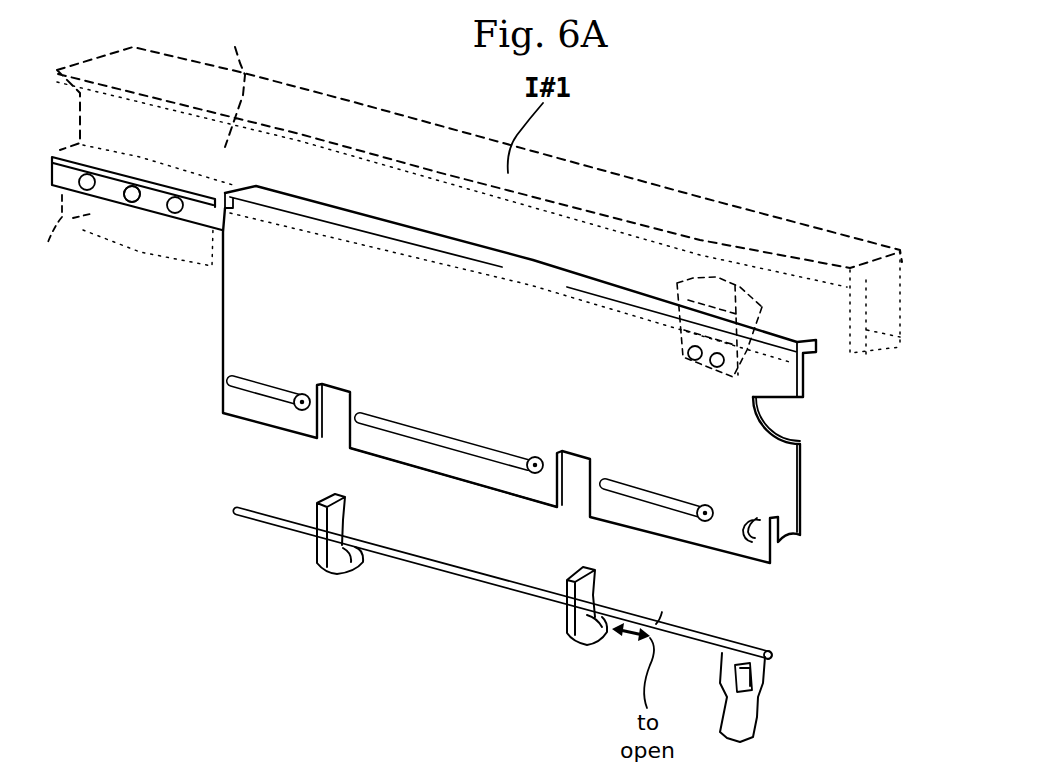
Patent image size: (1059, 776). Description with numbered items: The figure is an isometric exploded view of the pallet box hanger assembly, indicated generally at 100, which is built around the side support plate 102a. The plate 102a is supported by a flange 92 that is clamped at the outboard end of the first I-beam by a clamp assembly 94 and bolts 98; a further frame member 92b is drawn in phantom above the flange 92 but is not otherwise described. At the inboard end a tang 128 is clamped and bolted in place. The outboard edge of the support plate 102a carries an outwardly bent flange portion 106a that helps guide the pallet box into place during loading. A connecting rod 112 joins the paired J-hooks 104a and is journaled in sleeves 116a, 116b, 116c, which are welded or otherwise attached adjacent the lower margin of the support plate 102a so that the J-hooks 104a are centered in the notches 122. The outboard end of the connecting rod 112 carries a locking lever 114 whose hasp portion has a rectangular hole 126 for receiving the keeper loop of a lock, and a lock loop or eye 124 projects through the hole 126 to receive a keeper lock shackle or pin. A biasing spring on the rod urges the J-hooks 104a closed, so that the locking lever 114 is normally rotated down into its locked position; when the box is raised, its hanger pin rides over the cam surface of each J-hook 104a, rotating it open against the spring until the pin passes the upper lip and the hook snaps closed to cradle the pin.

The frame top member 92b is at (228, 43).
The flange 92 is at (556, 292).
The clamp assembly 94 is at (783, 195).
The bolts 98 is at (697, 360).
The latch bracket 100 is at (198, 333).
The side support plate 102a is at (490, 368).
The J-hooks 104a is at (343, 565).
The outwardly bent flange portion 106a is at (778, 483).
The connecting rod 112 is at (460, 575).
The locking lever 114 is at (735, 720).
The sleeve 116a is at (652, 493).
The sleeve 116b is at (502, 453).
The sleeve 116c is at (273, 387).
The notches 122 is at (343, 390).
The lock loop or eye 124 is at (758, 517).
The rectangular hole 126 is at (745, 678).
The tang 128 is at (138, 196).